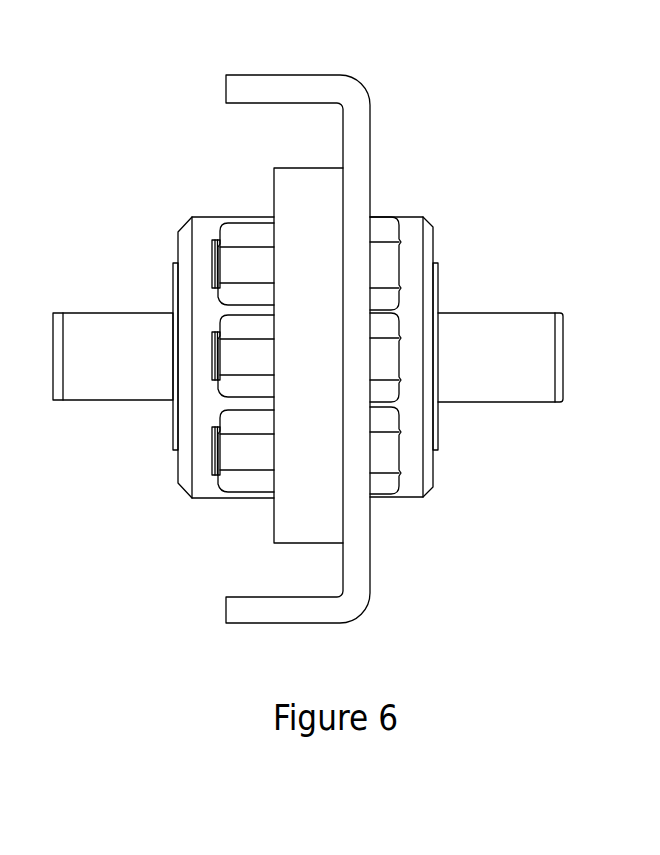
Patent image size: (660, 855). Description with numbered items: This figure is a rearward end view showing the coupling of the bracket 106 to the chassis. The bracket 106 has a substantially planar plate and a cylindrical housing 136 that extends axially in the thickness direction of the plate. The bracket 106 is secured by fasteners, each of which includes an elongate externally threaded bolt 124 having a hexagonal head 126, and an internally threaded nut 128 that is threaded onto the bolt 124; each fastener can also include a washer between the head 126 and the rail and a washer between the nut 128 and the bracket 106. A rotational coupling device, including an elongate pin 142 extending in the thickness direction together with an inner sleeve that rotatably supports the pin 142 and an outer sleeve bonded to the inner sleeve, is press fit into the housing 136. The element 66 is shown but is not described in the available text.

The bracket 66 is at (281, 88).
The bracket 106 is at (280, 188).
The bolt 124 is at (218, 262).
The hexagonal head 126 is at (388, 453).
The nut 128 is at (238, 387).
The cylindrical housing 136 is at (413, 234).
The pin 142 is at (522, 325).